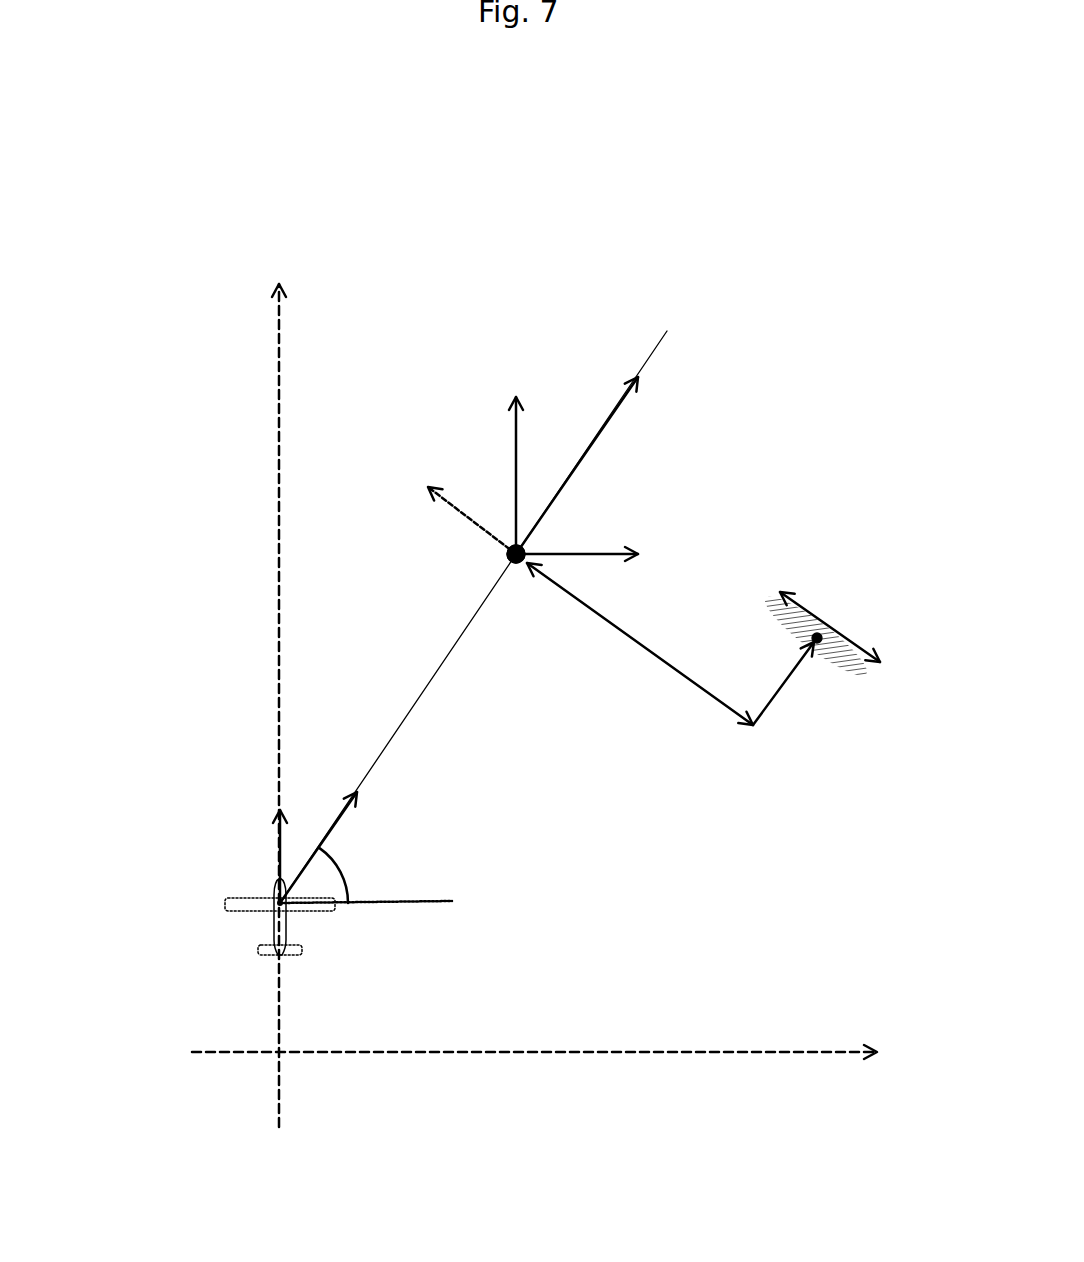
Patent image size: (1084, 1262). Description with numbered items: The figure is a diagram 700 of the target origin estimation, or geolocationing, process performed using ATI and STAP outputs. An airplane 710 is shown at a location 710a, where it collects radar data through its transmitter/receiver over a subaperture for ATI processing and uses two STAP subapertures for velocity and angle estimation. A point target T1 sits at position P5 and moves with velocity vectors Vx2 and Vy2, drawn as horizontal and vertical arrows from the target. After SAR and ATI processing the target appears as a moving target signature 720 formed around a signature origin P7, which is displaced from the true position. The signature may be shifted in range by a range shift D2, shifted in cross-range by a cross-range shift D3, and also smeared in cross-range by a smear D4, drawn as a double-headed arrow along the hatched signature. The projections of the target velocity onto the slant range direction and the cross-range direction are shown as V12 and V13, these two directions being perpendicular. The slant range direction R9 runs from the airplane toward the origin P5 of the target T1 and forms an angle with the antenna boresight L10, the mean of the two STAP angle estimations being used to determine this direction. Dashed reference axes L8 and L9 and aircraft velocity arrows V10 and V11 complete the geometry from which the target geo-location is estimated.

The diagram 700 is at (170, 196).
The airplane 710 is at (250, 900).
The location 710a is at (290, 905).
The moving target signature 720 is at (790, 625).
The vertical reference line L8 is at (275, 330).
The horizontal reference line L9 is at (805, 1047).
The boresight L10 is at (427, 908).
The slant range direction R9 is at (402, 735).
The aircraft velocity vector V10 is at (270, 848).
The aircraft heading velocity vector V11 is at (340, 815).
The radial velocity projection V12 is at (615, 392).
The cross-range velocity projection V13 is at (450, 508).
The target velocity vector Vy2 is at (508, 436).
The target velocity vector Vx2 is at (608, 548).
The position P5 is at (500, 558).
The signature origin P7 is at (822, 648).
The point target T1 is at (518, 566).
The range shift D2 is at (785, 700).
The cross-range shift D3 is at (700, 688).
The cross-range smear D4 is at (815, 605).